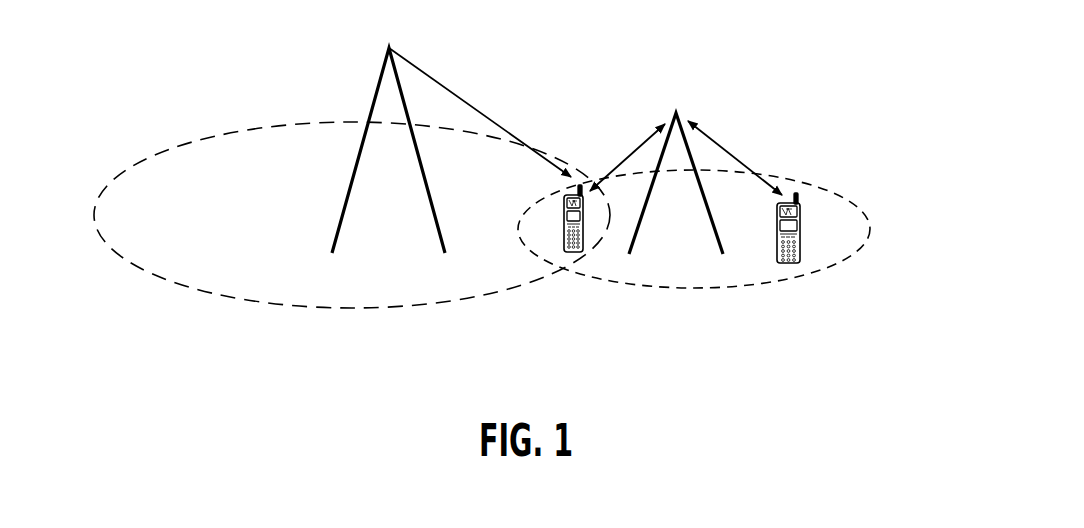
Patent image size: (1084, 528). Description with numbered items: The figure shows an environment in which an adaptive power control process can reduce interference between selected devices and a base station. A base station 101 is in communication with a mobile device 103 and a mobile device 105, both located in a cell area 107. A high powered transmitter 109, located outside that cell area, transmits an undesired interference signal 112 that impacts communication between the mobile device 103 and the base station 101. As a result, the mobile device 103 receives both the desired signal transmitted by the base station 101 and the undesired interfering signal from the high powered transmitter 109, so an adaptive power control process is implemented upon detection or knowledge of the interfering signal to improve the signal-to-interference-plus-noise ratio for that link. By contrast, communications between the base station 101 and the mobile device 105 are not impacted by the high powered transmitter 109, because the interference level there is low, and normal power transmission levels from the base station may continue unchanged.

The base station 101 is at (674, 253).
The mobile device 103 is at (571, 253).
The mobile device 105 is at (787, 264).
The cell area 107 is at (872, 230).
The high powered transmitter 109 is at (367, 263).
The undesired interference signal 112 is at (470, 103).